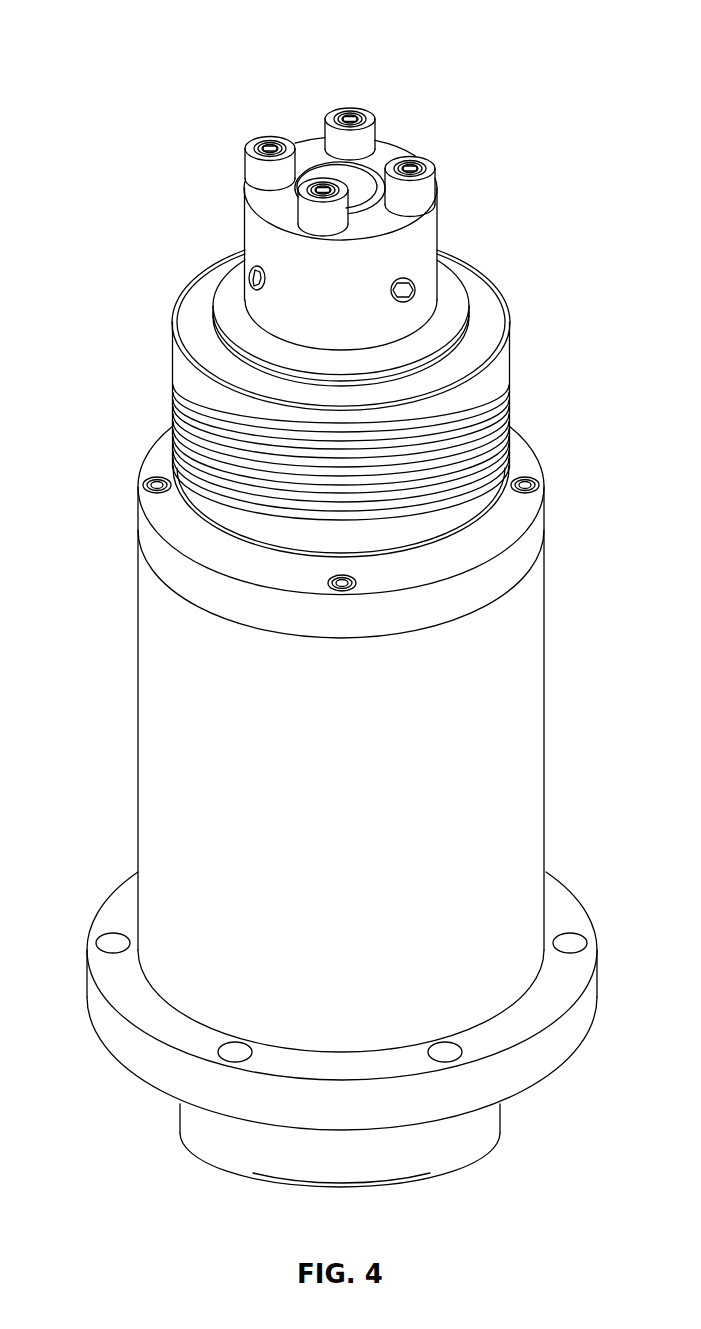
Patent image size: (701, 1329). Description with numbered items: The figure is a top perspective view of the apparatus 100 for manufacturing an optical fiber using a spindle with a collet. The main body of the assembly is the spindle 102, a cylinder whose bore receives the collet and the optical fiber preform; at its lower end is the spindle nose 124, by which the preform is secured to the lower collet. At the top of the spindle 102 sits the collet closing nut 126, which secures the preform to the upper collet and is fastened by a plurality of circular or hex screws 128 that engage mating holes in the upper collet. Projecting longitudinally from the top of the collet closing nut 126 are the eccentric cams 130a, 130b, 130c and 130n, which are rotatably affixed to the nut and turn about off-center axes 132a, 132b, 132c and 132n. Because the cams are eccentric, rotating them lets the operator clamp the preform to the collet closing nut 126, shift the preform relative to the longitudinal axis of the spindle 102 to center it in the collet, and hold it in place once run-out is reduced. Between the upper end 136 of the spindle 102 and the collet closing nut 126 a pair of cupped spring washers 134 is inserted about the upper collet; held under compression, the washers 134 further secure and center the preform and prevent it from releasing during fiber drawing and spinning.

The apparatus 100 is at (126, 40).
The spindle 102 is at (138, 716).
The spindle nose 124 is at (237, 1163).
The collet closing nut 126 is at (438, 222).
The screws 128 is at (250, 277).
The eccentric cam 130a is at (310, 197).
The eccentric cam 130b is at (258, 137).
The eccentric cam 130c is at (336, 113).
The eccentric cam 130n is at (407, 160).
The off-center axis 132a is at (330, 186).
The off-center axis 132b is at (277, 147).
The off-center axis 132c is at (357, 113).
The off-center axis 132n is at (418, 172).
The cupped spring washers 134 is at (473, 308).
The upper end of the spindle 136 is at (483, 328).